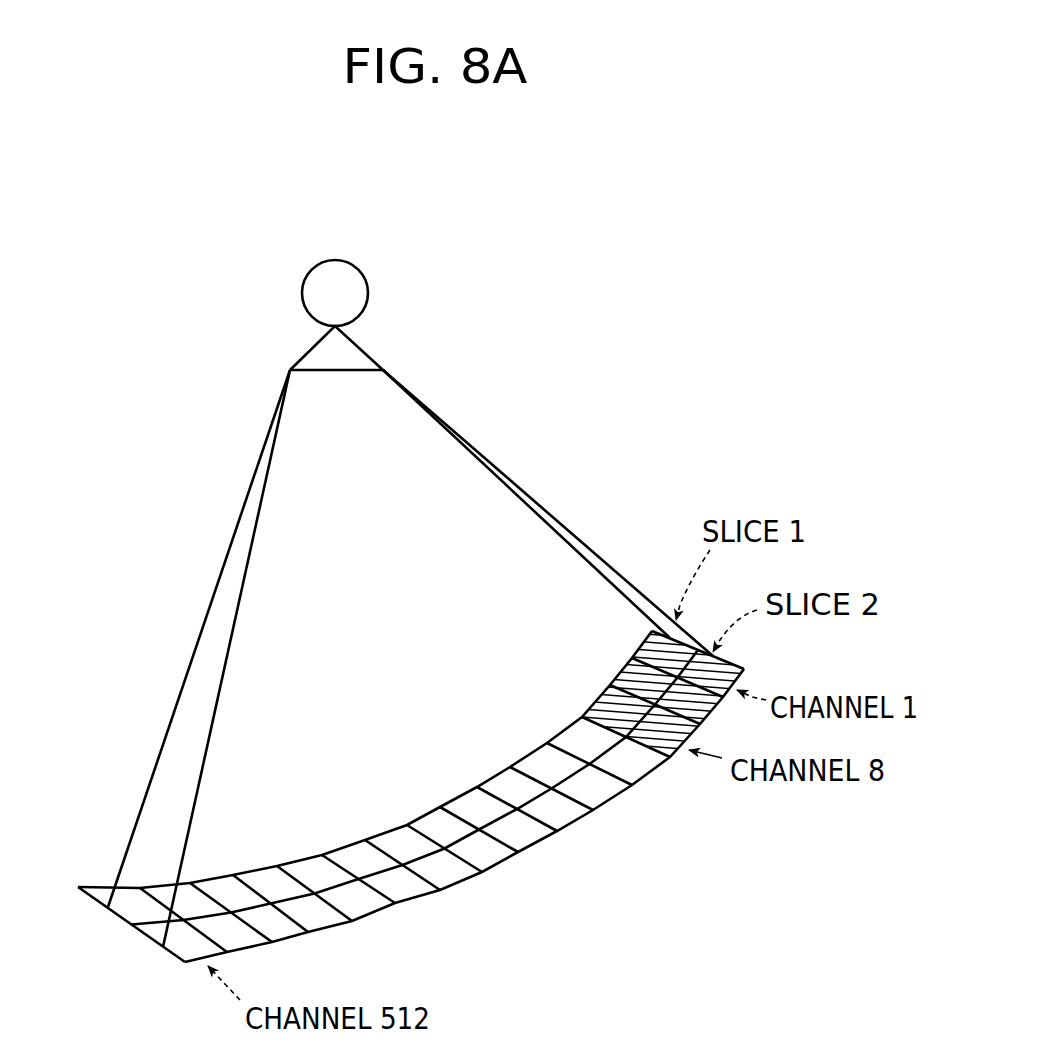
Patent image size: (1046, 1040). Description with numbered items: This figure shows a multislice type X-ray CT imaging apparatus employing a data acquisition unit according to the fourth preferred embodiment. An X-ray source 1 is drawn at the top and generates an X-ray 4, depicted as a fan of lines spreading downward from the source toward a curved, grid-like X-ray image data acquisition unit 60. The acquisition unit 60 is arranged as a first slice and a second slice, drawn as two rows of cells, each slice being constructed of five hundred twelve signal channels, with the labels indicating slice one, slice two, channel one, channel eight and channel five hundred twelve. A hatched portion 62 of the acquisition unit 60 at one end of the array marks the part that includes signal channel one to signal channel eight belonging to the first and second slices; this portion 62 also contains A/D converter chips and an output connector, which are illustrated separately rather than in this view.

The X-ray source 1 is at (366, 294).
The X-ray 4 is at (492, 462).
The X-ray image data acquisition unit 60 is at (413, 719).
The portion of the data acquisition unit 62 is at (620, 672).